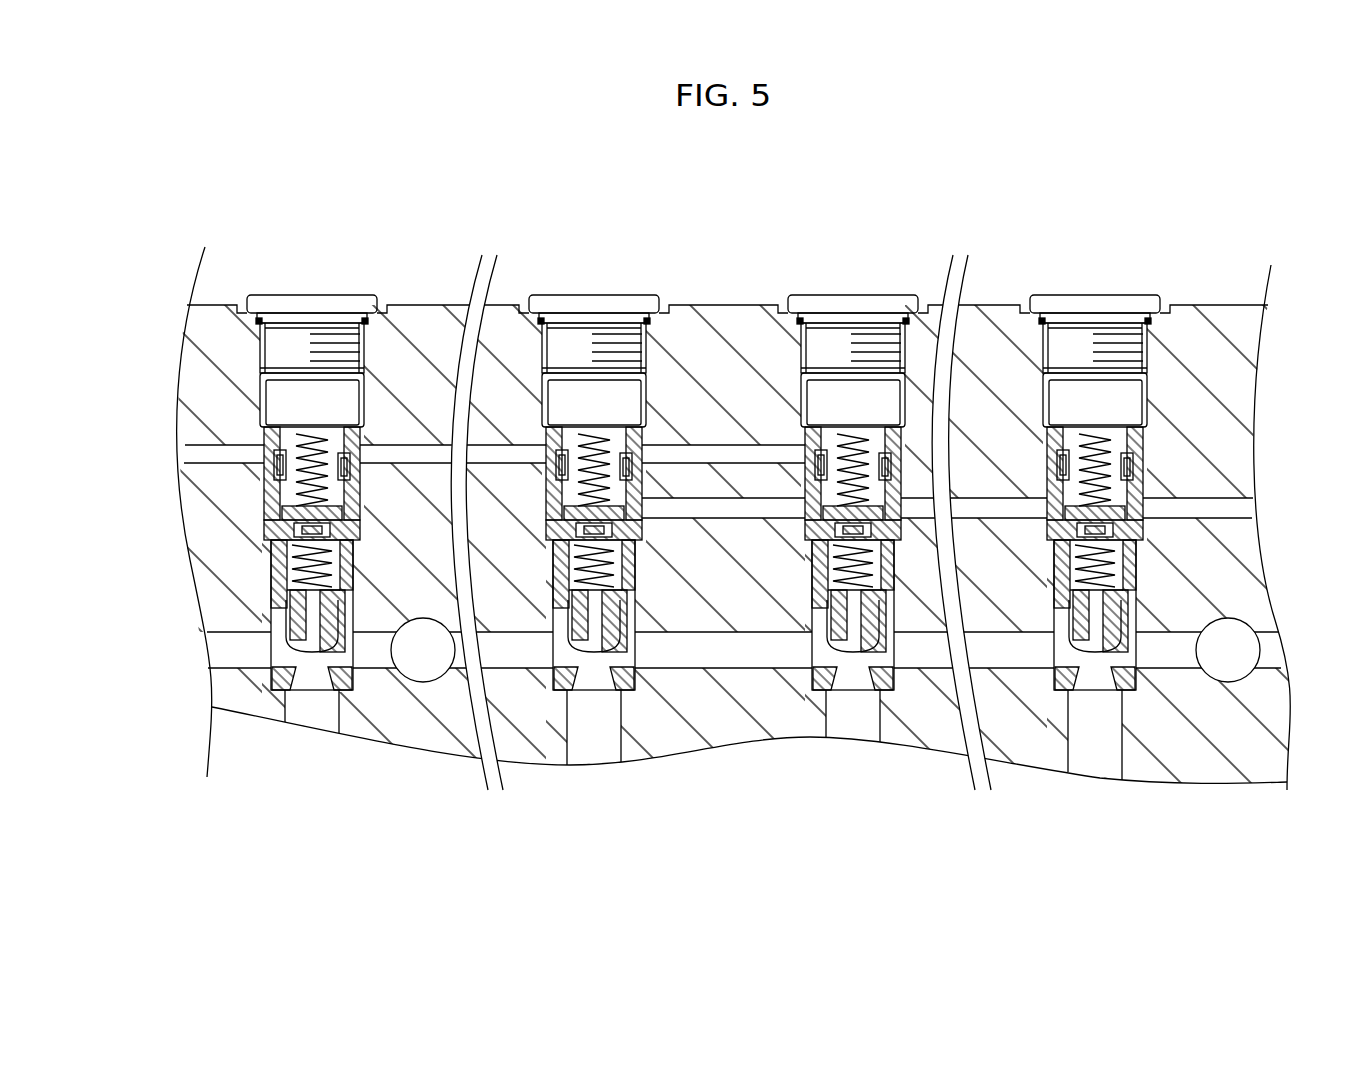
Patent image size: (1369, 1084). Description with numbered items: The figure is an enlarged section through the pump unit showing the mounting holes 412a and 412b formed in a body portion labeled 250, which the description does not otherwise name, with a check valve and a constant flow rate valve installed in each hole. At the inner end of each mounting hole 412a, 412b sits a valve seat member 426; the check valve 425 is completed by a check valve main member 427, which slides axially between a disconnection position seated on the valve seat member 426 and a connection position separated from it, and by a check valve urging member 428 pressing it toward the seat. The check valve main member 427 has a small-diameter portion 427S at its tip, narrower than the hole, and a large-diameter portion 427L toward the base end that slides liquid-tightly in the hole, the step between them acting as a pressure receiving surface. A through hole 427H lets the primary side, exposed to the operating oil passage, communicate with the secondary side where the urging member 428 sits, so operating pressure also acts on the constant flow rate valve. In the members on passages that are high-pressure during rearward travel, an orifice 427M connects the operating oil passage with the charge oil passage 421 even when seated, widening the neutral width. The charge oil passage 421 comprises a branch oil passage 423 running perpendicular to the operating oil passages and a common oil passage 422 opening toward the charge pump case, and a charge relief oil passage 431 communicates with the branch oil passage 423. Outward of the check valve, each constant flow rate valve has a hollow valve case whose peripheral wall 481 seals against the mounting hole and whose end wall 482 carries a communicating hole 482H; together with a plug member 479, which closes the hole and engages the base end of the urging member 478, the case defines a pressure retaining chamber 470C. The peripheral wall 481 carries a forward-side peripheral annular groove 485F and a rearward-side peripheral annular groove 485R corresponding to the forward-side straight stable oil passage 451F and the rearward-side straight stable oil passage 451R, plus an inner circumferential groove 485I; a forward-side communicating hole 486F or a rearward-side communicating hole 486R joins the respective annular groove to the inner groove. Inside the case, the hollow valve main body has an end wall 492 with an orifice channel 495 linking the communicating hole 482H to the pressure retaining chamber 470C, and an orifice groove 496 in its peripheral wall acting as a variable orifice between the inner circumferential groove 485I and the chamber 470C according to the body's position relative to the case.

The cylinder block 250 is at (1250, 326).
The plug member 479 is at (320, 322).
The pressure retaining chamber 470C is at (266, 437).
The urging member 478 is at (282, 465).
The peripheral wall 481 is at (270, 456).
The orifice channel 495 is at (298, 536).
The orifice groove 496 is at (320, 440).
The inner circumferential groove 485I is at (343, 473).
The rearward-side peripheral annular groove 485R is at (372, 326).
The rearward-side communicating hole 486R is at (366, 425).
The forward-side communicating hole 486F is at (638, 467).
The forward-side peripheral annular groove 485F is at (355, 518).
The rearward-side straight stable oil passage 451R is at (412, 458).
The forward-side straight stable oil passage 451F is at (1020, 507).
The mounting hole 412b is at (233, 304).
The mounting hole 412a is at (912, 330).
The end wall 482 is at (290, 558).
The communicating hole 482H is at (290, 583).
The check valve urging member 428 is at (271, 630).
The end wall 492 is at (358, 546).
The check valve main member 427 is at (1125, 604).
The large-diameter portion 427L is at (350, 586).
The small-diameter portion 427S is at (362, 622).
The orifice 427M is at (265, 693).
The through hole 427H is at (313, 688).
The valve seat member 426 is at (340, 715).
The check valve 425 is at (363, 679).
The common oil passage 422 is at (422, 655).
The branch oil passage 423 is at (470, 658).
The charge oil passage 421 is at (500, 862).
The charge relief oil passage 431 is at (1240, 651).